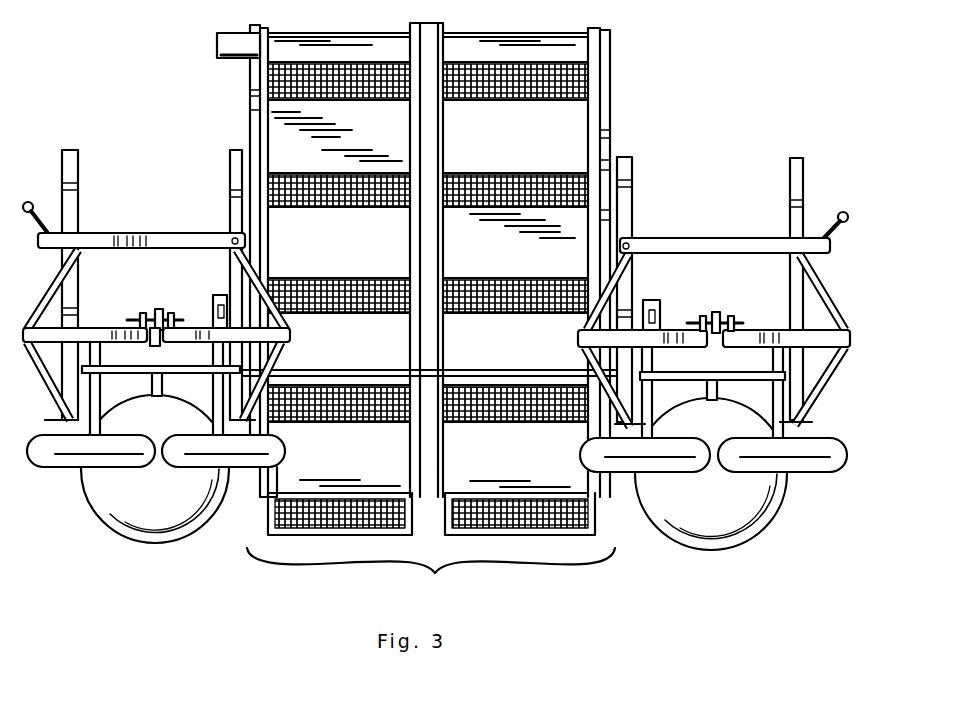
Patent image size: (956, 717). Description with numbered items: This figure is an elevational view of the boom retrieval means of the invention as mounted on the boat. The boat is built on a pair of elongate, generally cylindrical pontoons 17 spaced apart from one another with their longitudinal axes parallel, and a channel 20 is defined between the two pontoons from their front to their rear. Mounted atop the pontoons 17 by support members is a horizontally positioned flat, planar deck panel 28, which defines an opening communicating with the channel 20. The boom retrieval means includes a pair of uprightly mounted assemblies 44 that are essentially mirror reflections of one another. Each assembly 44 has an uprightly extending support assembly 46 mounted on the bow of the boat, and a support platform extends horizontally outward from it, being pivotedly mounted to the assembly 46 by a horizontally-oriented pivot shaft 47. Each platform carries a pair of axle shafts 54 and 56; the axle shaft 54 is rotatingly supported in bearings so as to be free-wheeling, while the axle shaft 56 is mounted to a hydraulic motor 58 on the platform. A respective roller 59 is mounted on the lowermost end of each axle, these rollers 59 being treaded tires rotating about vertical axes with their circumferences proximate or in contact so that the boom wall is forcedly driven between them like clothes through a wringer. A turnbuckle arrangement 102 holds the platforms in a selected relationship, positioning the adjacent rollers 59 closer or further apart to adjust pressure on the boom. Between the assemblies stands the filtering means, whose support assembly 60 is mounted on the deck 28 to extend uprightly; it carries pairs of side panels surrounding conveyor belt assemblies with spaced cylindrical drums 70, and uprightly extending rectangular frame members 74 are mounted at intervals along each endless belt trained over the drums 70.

The pontoons 17 is at (167, 506).
The channel 20 is at (431, 312).
The deck panel 28 is at (513, 368).
The uprightly mounted assemblies 44 is at (172, 233).
The support assembly 46 is at (80, 168).
The pivot shaft 47 is at (233, 238).
The axle shaft 54 is at (100, 395).
The axle shaft 56 is at (222, 368).
The hydraulic motor 58 is at (218, 295).
The rollers 59 is at (193, 430).
The support assembly 60 is at (252, 77).
The cylindrical drums 70 is at (364, 152).
The frame members 74 is at (310, 292).
The turnbuckle arrangement 102 is at (150, 318).